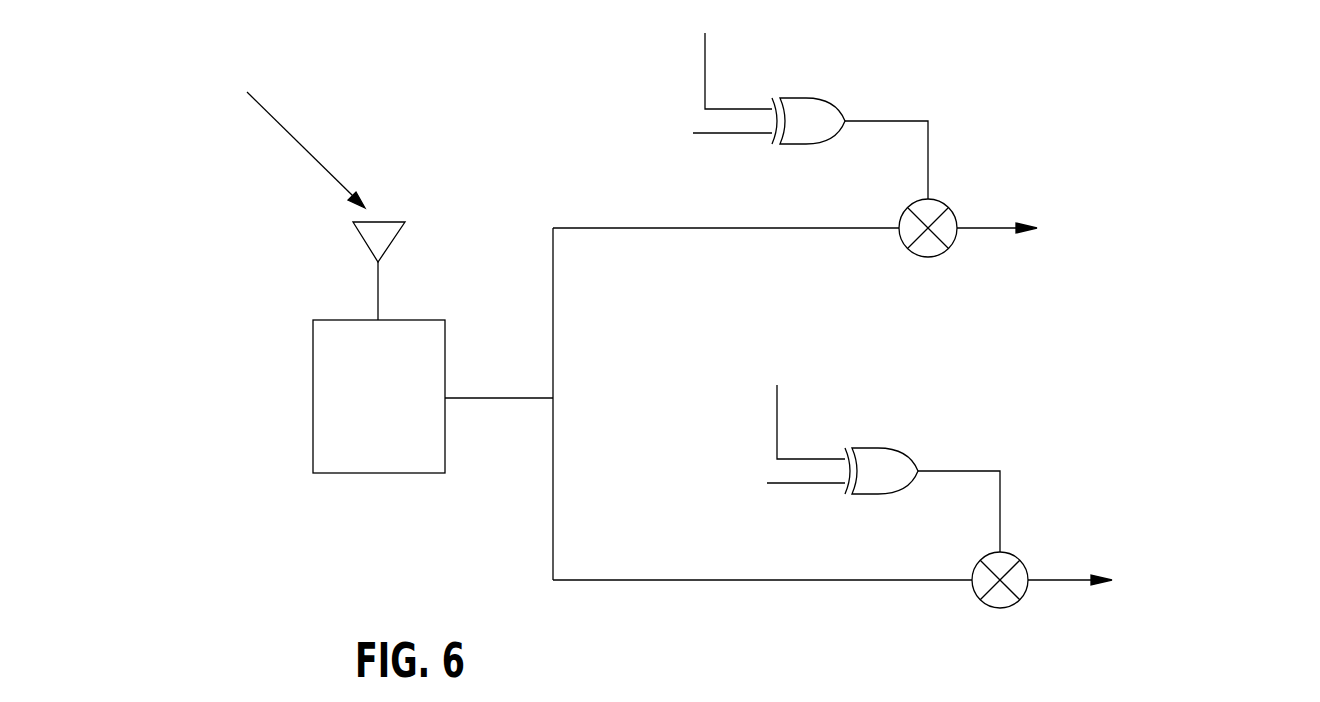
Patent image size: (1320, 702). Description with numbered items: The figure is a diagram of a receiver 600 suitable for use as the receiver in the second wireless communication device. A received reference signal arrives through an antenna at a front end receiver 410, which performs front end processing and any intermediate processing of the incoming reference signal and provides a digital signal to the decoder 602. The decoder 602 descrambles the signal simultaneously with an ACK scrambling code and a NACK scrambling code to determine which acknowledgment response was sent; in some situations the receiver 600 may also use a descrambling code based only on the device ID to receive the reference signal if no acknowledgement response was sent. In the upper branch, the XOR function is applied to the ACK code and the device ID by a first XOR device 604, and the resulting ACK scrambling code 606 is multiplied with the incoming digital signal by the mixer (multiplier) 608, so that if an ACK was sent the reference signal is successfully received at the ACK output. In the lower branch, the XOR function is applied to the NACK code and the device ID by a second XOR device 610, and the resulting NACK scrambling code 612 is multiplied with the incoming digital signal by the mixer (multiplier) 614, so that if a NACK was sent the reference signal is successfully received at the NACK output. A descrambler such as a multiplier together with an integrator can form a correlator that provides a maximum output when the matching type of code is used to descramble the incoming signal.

The receiver 600 is at (1282, 171).
The front end receiver 410 is at (362, 453).
The decoder 602 is at (1013, 48).
The first XOR device 604 is at (809, 97).
The ACK scrambling code 606 is at (928, 152).
The mixer (multiplier) 608 is at (946, 208).
The second XOR device 610 is at (882, 447).
The NACK scrambling code 612 is at (1000, 498).
The mixer (multiplier) 614 is at (1020, 561).